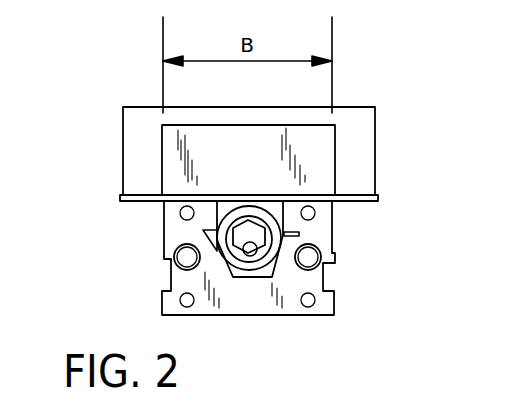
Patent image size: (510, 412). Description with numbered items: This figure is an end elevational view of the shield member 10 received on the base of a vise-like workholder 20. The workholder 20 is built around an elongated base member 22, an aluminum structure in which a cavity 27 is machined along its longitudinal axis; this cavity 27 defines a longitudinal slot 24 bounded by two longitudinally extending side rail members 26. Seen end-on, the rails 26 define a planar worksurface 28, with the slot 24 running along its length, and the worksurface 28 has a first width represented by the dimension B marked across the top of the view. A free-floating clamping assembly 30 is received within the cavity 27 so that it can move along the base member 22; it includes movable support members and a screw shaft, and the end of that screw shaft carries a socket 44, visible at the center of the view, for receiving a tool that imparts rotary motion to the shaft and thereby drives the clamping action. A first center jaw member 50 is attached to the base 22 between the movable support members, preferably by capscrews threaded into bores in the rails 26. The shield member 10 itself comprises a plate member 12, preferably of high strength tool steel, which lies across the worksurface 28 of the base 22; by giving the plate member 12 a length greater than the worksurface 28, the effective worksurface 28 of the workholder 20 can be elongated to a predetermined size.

The shield member 10 is at (395, 188).
The plate member 12 is at (120, 198).
The vise-like workholder 20 is at (120, 304).
The base member 22 is at (340, 303).
The longitudinal slot 24 is at (205, 230).
The side rail members 26 is at (165, 219).
The cavity 27 is at (176, 259).
The worksurface 28 is at (303, 201).
The clamping assembly 30 is at (300, 238).
The socket 44 is at (247, 257).
The first center jaw member 50 is at (350, 112).